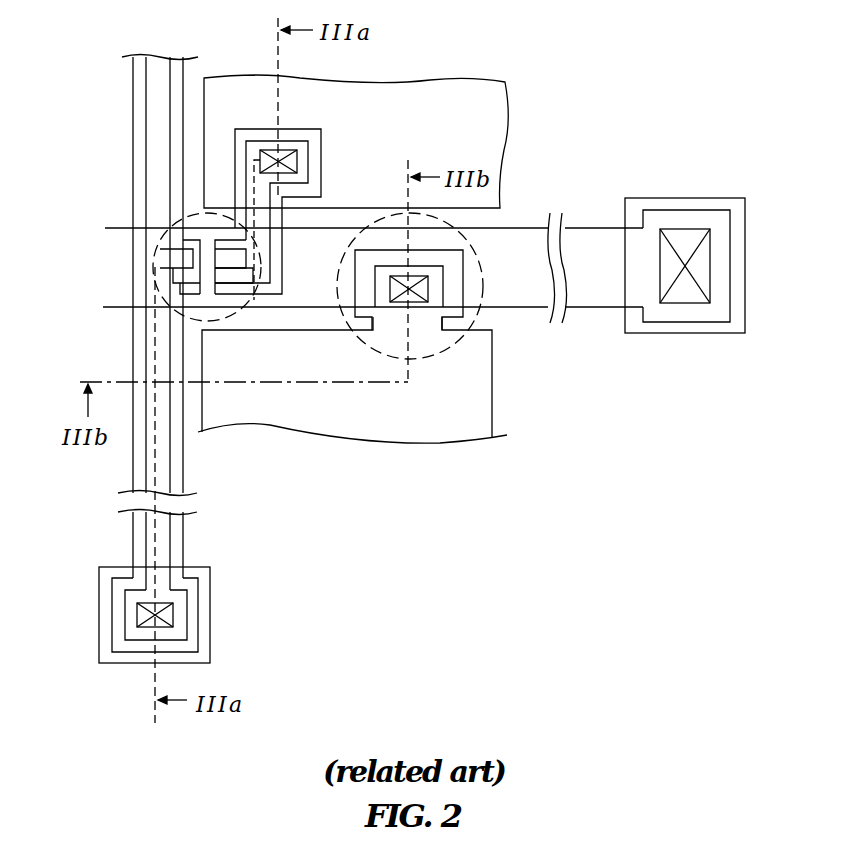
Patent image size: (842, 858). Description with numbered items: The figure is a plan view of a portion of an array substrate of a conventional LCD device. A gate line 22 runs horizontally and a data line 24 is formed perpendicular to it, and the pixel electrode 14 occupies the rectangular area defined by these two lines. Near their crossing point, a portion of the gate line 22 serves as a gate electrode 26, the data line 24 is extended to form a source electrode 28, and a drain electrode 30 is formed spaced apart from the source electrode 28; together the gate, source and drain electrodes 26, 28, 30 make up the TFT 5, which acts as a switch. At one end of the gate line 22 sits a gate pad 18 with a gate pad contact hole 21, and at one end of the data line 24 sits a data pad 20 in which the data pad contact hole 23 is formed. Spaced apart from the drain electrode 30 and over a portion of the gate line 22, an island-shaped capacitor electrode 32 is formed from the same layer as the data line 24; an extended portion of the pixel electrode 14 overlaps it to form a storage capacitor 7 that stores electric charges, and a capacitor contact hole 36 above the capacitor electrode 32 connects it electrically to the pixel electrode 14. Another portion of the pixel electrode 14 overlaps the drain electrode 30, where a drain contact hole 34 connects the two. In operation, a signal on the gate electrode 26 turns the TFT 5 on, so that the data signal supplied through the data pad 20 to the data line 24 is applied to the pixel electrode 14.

The TFT 5 is at (155, 253).
The storage capacitor 7 is at (438, 353).
The pixel electrode 14 is at (505, 137).
The gate pad 18 is at (717, 210).
The data pad 20 is at (178, 588).
The gate pad contact hole 21 is at (688, 228).
The gate line 22 is at (590, 232).
The data pad contact hole 23 is at (172, 617).
The data line 24 is at (157, 145).
The gate electrode 26 is at (230, 292).
The source electrode 28 is at (188, 247).
The drain electrode 30 is at (262, 305).
The capacitor electrode 32 is at (457, 302).
The drain contact hole 34 is at (288, 160).
The capacitor contact hole 36 is at (427, 277).